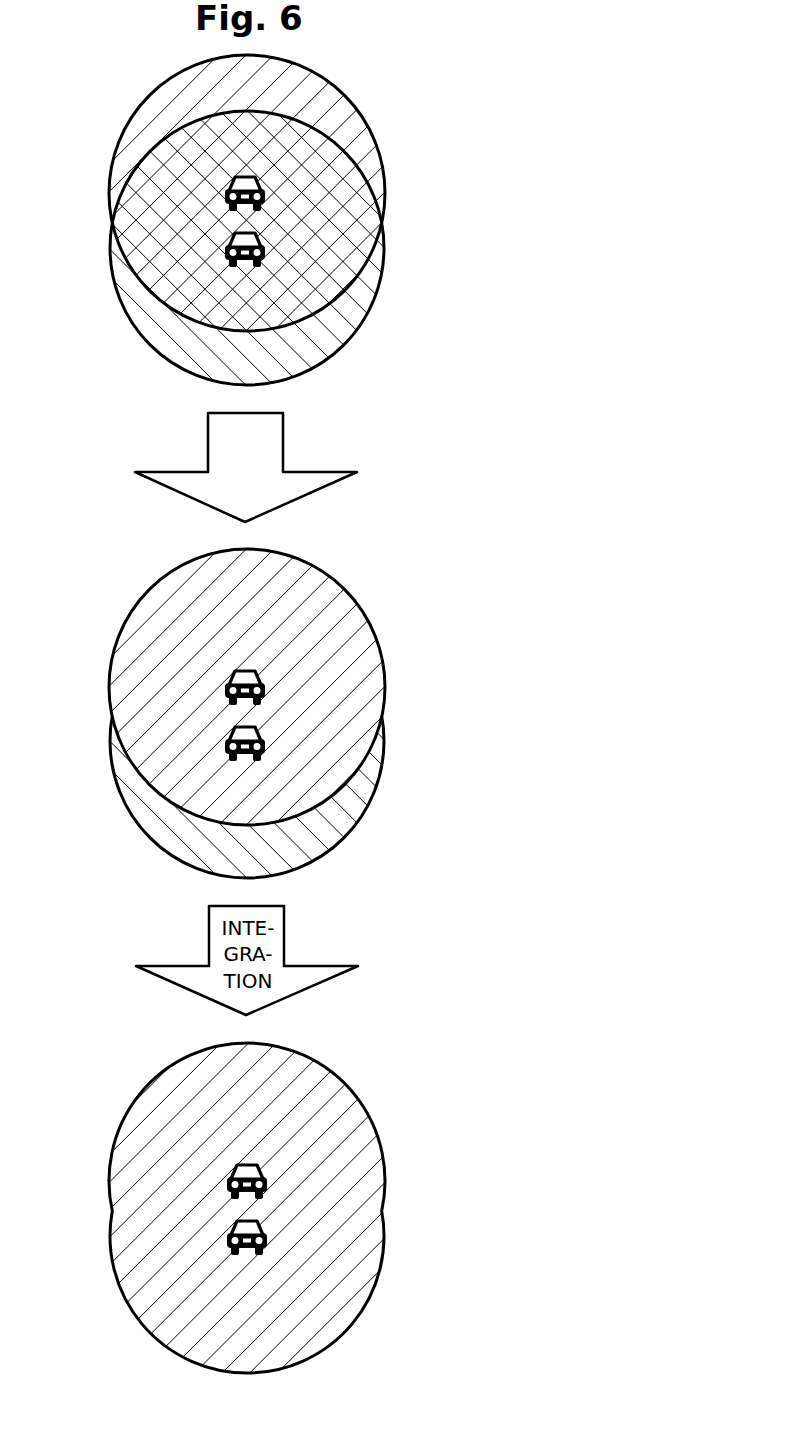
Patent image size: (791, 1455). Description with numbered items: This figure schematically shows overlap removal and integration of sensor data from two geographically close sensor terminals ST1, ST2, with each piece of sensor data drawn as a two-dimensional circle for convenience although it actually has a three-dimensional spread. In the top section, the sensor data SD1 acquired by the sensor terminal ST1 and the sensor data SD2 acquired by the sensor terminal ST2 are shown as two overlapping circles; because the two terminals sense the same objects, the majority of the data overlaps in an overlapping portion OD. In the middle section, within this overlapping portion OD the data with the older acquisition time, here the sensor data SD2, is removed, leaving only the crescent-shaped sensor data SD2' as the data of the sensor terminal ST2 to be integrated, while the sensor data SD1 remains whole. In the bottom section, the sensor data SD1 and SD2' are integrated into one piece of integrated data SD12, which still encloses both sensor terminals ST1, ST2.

The sensor data SD1 is at (356, 113).
The sensor data SD2 is at (263, 249).
The sensor data SD2' is at (266, 742).
The integrated data SD12 is at (363, 1097).
The sensor terminal ST1 is at (267, 195).
The sensor terminal ST2 is at (267, 253).
The overlapping portion OD is at (130, 263).